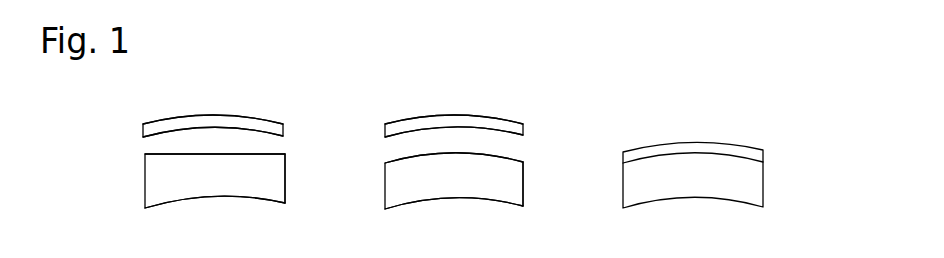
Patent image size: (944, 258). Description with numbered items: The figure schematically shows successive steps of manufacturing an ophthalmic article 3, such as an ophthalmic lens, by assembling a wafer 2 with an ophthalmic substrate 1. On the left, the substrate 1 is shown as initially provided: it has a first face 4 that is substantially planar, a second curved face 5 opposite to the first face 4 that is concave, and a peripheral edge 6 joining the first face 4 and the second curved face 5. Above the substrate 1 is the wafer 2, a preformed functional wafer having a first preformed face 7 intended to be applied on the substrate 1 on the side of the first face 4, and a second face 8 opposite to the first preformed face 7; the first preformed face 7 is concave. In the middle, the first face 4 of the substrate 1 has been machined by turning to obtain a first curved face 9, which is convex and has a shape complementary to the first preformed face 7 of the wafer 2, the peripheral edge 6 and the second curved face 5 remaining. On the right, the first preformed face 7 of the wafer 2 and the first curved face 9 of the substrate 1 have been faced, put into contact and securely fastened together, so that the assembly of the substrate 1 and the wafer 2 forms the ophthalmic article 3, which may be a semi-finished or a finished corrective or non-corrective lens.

The ophthalmic substrate 1 is at (122, 183).
The wafer 2 is at (122, 128).
The ophthalmic article 3 is at (805, 160).
The first face 4 is at (247, 153).
The second curved face 5 is at (199, 197).
The peripheral edge 6 is at (287, 190).
The first preformed face 7 is at (193, 128).
The second face 8 is at (171, 117).
The first curved face 9 is at (498, 155).